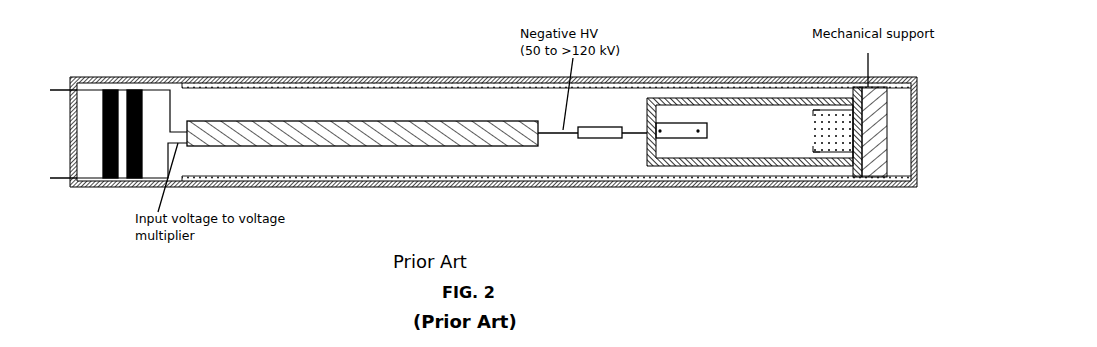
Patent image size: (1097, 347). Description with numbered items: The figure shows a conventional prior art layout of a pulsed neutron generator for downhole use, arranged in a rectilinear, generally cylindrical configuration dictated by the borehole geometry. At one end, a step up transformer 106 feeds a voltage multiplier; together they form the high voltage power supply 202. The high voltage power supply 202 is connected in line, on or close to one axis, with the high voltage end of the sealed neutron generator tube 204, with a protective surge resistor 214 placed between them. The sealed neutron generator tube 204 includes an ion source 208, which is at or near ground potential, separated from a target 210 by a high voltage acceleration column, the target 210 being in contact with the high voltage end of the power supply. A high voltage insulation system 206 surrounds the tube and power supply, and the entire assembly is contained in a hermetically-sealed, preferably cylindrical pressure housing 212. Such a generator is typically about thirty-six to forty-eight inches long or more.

The step up transformer 106 is at (116, 78).
The high voltage insulation system 206 is at (285, 77).
The high voltage power supply 202 is at (405, 127).
The protective surge resistor 214 is at (602, 127).
The pressure housing 212 is at (507, 187).
The target 210 is at (707, 138).
The ion source 208 is at (832, 135).
The sealed neutron generator tube 204 is at (753, 135).